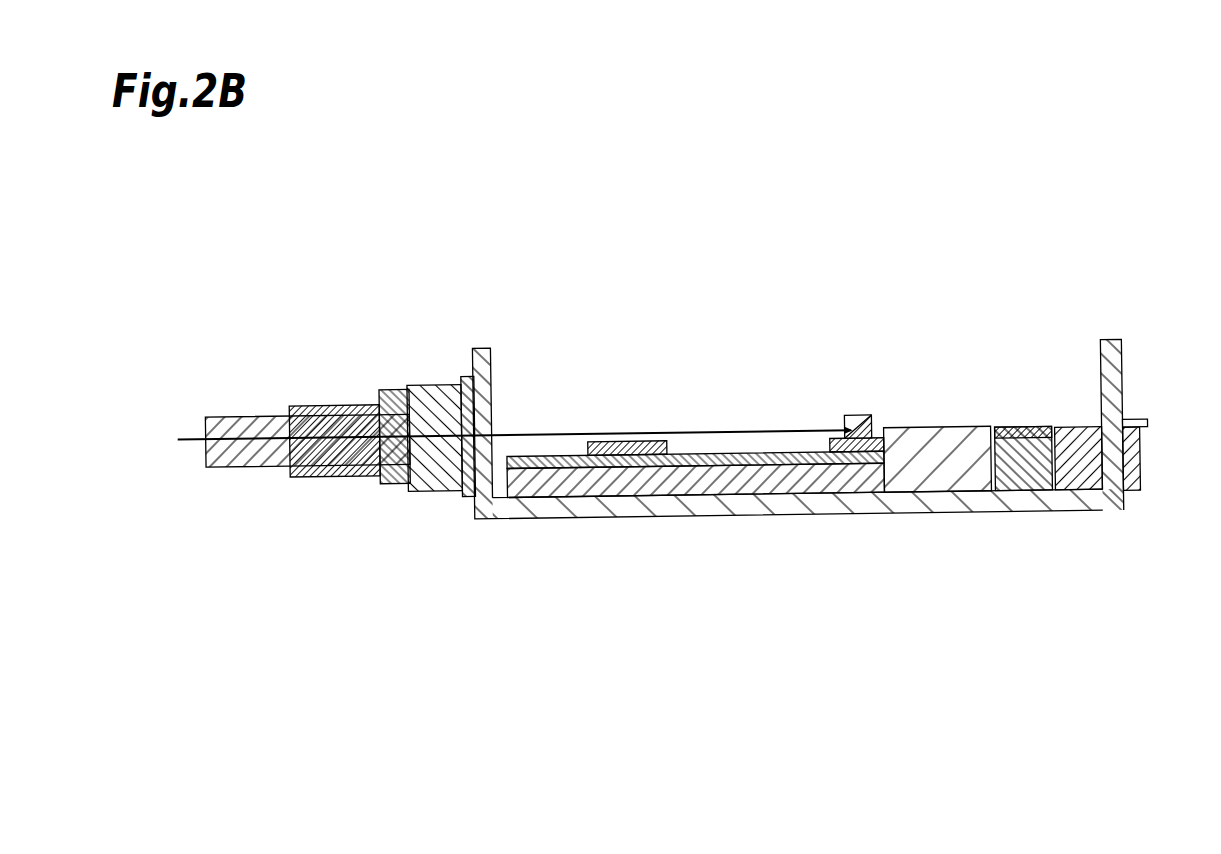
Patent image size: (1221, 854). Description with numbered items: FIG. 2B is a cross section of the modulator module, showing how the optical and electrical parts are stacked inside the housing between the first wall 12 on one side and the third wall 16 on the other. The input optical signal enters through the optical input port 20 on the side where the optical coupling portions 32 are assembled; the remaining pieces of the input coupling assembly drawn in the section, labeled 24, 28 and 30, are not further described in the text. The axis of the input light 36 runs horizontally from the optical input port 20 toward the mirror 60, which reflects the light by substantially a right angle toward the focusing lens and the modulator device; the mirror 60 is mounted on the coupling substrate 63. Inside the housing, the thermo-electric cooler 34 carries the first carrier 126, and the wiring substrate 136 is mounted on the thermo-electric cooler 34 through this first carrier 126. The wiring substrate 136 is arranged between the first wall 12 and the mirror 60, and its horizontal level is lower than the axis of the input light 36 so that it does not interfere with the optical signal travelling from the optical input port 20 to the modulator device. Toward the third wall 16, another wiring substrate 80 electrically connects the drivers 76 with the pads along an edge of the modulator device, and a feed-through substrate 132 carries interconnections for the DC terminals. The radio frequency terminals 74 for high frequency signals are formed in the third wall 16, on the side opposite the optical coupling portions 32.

The first wall 12 is at (492, 368).
The third wall 16 is at (1115, 365).
The optical input port 20 is at (462, 387).
The optical fiber 24 is at (228, 432).
The ferrule 28 is at (260, 417).
The sleeve 30 is at (343, 399).
The optical coupling portion 32 is at (408, 382).
The thermo-electric cooler 34 is at (548, 471).
The input light 36 is at (760, 431).
The mirror 60 is at (855, 430).
The coupling substrate 63 is at (855, 455).
The terminal 74 is at (1152, 426).
The driver 76 is at (1019, 432).
The wiring substrate 80 is at (937, 442).
The first carrier 126 is at (692, 457).
The feed-through substrate 132 is at (1067, 436).
The wiring substrate 136 is at (627, 442).